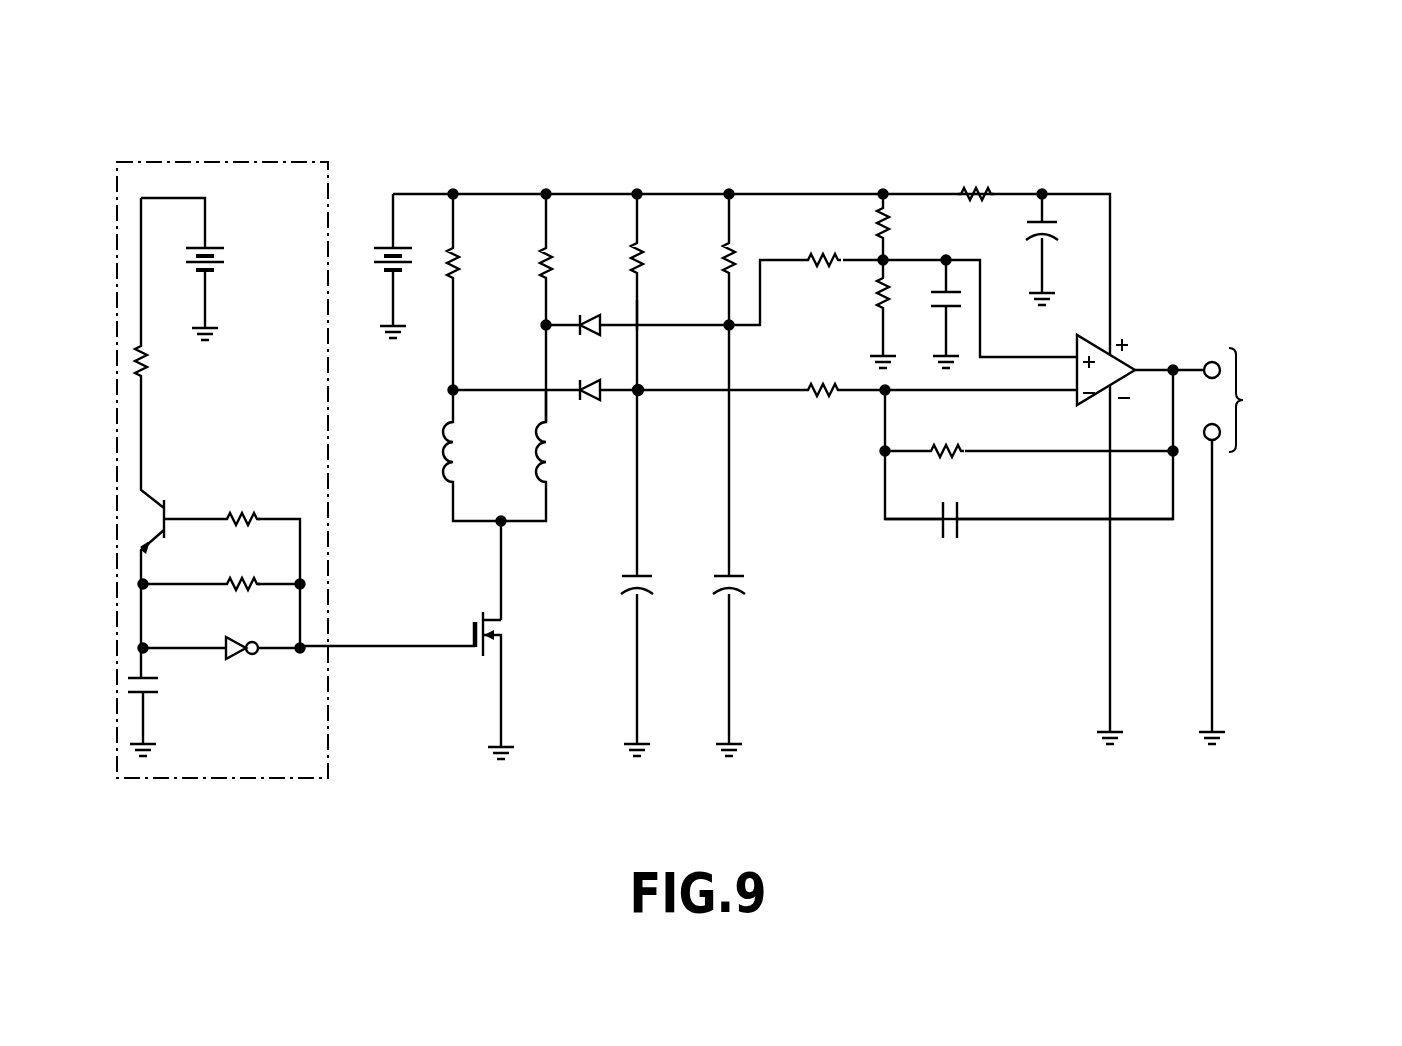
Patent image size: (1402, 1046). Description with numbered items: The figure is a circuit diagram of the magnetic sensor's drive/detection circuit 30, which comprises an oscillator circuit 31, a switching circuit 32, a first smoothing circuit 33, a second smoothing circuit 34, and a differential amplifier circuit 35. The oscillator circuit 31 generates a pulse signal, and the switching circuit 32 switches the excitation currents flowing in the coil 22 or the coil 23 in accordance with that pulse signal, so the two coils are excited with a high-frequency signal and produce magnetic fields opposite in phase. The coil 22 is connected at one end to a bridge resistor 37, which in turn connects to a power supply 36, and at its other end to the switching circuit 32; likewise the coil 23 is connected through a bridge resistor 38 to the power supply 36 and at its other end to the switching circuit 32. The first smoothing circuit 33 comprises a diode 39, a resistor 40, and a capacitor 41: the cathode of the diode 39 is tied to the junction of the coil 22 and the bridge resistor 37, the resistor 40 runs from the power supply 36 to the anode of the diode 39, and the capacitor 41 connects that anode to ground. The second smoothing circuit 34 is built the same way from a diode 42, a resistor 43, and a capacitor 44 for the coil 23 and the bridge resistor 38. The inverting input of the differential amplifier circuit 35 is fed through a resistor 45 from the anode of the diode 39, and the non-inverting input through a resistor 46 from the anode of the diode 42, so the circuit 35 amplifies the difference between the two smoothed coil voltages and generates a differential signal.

The coil 22 is at (444, 450).
The coil 23 is at (539, 458).
The drive/detection circuit 30 is at (941, 148).
The oscillator circuit 31 is at (240, 162).
The switching circuit 32 is at (496, 619).
The first smoothing circuit 33 is at (631, 401).
The second smoothing circuit 34 is at (621, 299).
The differential amplifier circuit 35 is at (1121, 360).
The power supply 36 is at (390, 246).
The bridge resistor 37 is at (453, 253).
The bridge resistor 38 is at (540, 257).
The diode 39 is at (579, 382).
The resistor 40 is at (648, 258).
The capacitor 41 is at (634, 592).
The diode 42 is at (594, 314).
The resistor 43 is at (742, 258).
The capacitor 44 is at (727, 592).
The resistor 45 is at (816, 395).
The resistor 46 is at (820, 247).